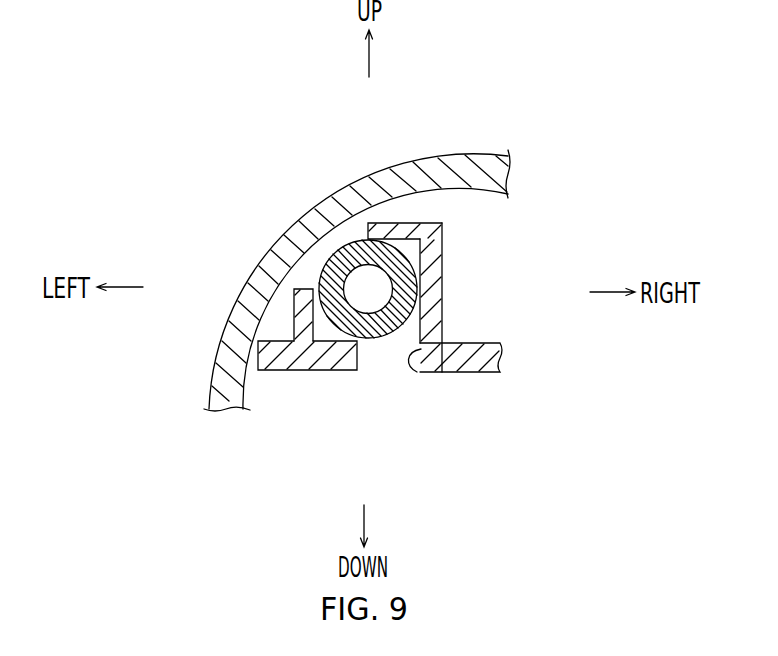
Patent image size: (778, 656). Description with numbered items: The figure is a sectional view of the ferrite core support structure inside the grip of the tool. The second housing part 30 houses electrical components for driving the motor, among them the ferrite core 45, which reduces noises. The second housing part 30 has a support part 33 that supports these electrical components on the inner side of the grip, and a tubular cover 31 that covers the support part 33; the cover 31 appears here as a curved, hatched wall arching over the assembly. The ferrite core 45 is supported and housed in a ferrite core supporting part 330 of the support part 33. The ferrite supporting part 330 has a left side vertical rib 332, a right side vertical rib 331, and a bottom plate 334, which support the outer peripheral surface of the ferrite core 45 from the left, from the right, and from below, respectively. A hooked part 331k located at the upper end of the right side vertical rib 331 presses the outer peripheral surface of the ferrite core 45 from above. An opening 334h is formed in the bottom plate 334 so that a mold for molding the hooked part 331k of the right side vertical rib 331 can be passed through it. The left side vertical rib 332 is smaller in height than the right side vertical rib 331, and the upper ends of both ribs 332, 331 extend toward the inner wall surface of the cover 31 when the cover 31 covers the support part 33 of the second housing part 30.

The second housing part 30 is at (357, 263).
The cover 31 is at (283, 247).
The support part 33 is at (485, 330).
The ferrite core 45 is at (380, 341).
The ferrite core supporting part 330 is at (438, 253).
The right side vertical rib 331 is at (476, 294).
The hooked part 331k is at (407, 232).
The left side vertical rib 332 is at (302, 311).
The bottom plate 334 is at (303, 362).
The opening 334h is at (417, 372).